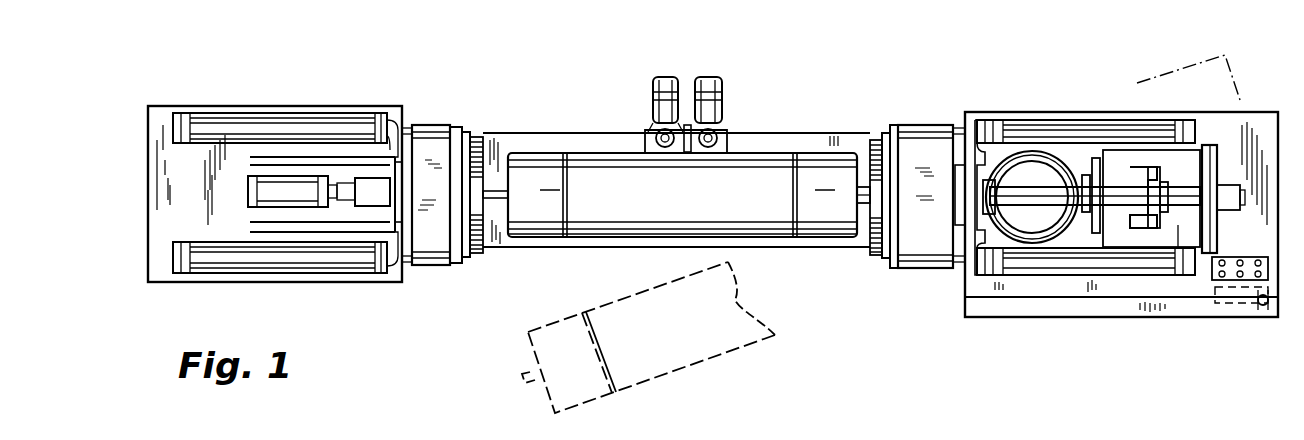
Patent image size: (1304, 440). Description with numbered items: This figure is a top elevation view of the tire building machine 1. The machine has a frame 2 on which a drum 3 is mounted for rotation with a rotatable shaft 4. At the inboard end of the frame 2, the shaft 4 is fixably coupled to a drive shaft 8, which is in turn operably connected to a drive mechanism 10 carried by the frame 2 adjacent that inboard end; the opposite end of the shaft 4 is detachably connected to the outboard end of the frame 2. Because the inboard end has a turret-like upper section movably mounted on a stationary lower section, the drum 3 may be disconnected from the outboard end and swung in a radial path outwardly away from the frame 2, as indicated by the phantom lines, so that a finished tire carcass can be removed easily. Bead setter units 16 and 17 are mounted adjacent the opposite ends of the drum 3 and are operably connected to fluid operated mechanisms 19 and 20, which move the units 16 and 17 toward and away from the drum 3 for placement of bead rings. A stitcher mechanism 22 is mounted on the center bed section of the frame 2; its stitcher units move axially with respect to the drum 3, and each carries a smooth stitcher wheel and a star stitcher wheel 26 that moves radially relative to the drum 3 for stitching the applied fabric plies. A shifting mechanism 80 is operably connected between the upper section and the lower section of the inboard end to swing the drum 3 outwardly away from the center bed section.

The tire building machine 1 is at (170, 85).
The frame 2 is at (502, 128).
The drum 3 is at (594, 170).
The rotatable shaft 4 is at (866, 186).
The drive shaft 8 is at (1033, 185).
The drive mechanism 10 is at (1215, 132).
The bead setter unit 16 is at (430, 150).
The bead setter unit 17 is at (920, 165).
The fluid operated mechanism 19 is at (247, 110).
The fluid operated mechanism 20 is at (1110, 125).
The stitcher mechanism 22 is at (656, 80).
The star stitcher wheel 26 is at (687, 128).
The shifting mechanism 80 is at (1272, 322).